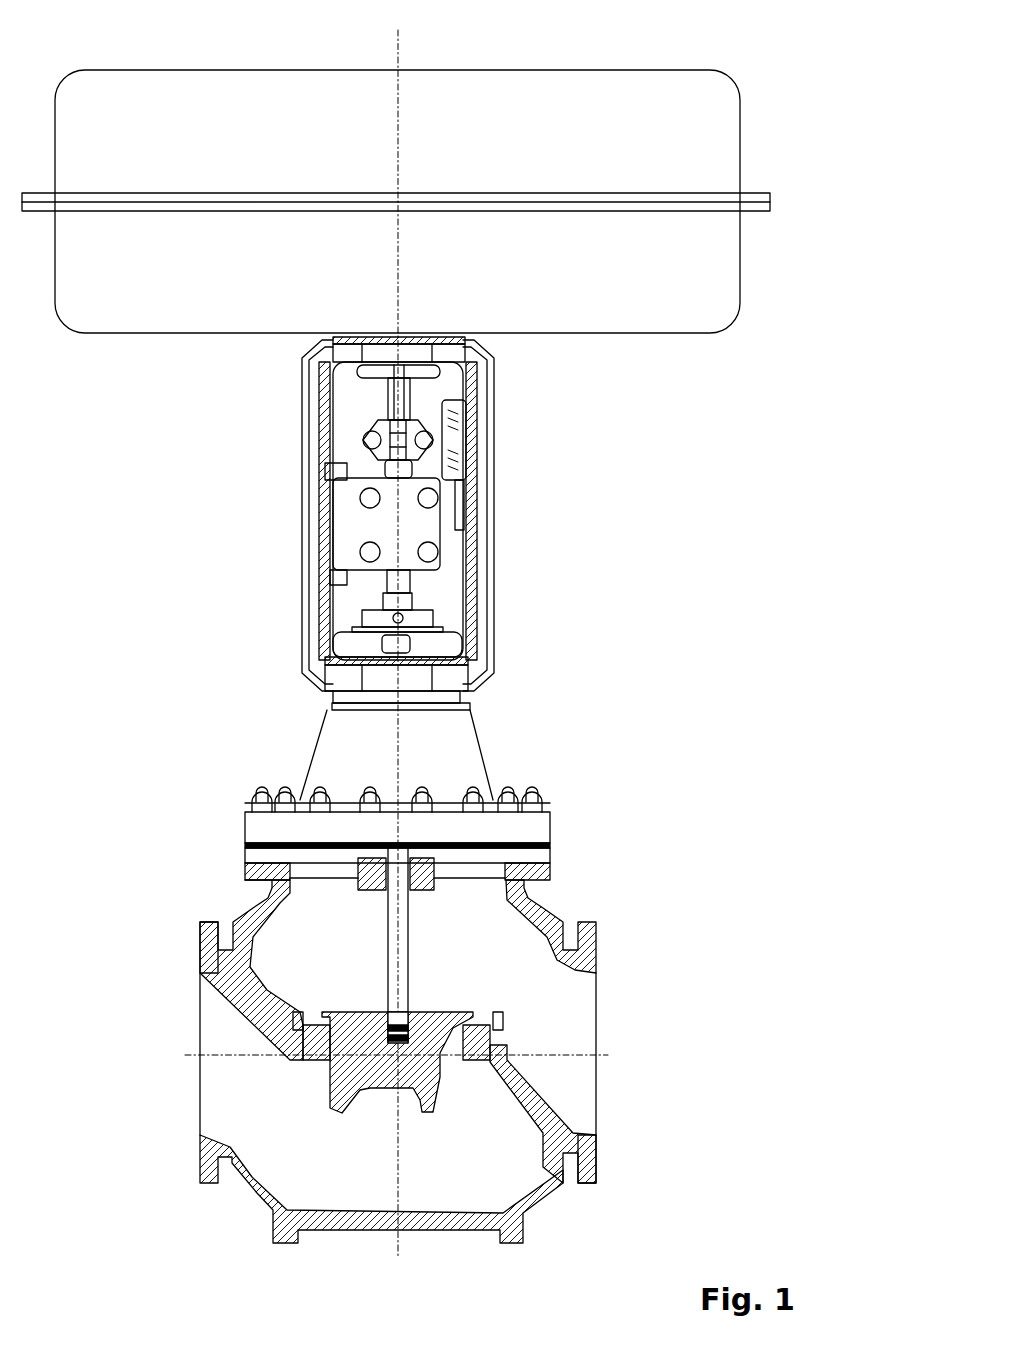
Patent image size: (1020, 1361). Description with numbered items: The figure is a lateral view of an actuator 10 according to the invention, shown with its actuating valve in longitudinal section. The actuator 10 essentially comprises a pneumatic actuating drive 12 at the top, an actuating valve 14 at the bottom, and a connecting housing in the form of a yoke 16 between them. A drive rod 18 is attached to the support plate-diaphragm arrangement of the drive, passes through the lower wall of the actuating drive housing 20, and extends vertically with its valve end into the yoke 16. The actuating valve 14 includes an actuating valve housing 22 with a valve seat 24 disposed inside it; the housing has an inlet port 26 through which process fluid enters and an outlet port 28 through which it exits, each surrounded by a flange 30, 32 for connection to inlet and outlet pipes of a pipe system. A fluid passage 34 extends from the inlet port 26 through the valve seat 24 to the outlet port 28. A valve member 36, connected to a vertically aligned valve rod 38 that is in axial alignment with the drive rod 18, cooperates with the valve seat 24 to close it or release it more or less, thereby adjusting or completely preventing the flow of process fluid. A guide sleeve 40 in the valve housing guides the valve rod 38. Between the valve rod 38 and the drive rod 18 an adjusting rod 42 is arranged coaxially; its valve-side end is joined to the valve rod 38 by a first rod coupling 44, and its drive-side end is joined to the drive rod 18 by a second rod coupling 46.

The actuator 10 is at (657, 702).
The pneumatic actuating drive 12 is at (733, 76).
The actuating valve 14 is at (552, 913).
The yoke 16 is at (499, 452).
The drive rod 18 is at (440, 390).
The actuating drive housing 20 is at (745, 283).
The actuating valve housing 22 is at (238, 915).
The valve seat 24 is at (490, 1043).
The inlet port 26 is at (190, 1118).
The outlet port 28 is at (598, 1063).
The flange 30 is at (197, 945).
The flange 32 is at (598, 1165).
The fluid passage 34 is at (476, 1157).
The valve member 36 is at (333, 1113).
The valve rod 38 is at (410, 935).
The guide sleeve 40 is at (405, 905).
The adjusting rod 42 is at (385, 473).
The first rod coupling 44 is at (497, 522).
The second rod coupling 46 is at (382, 428).